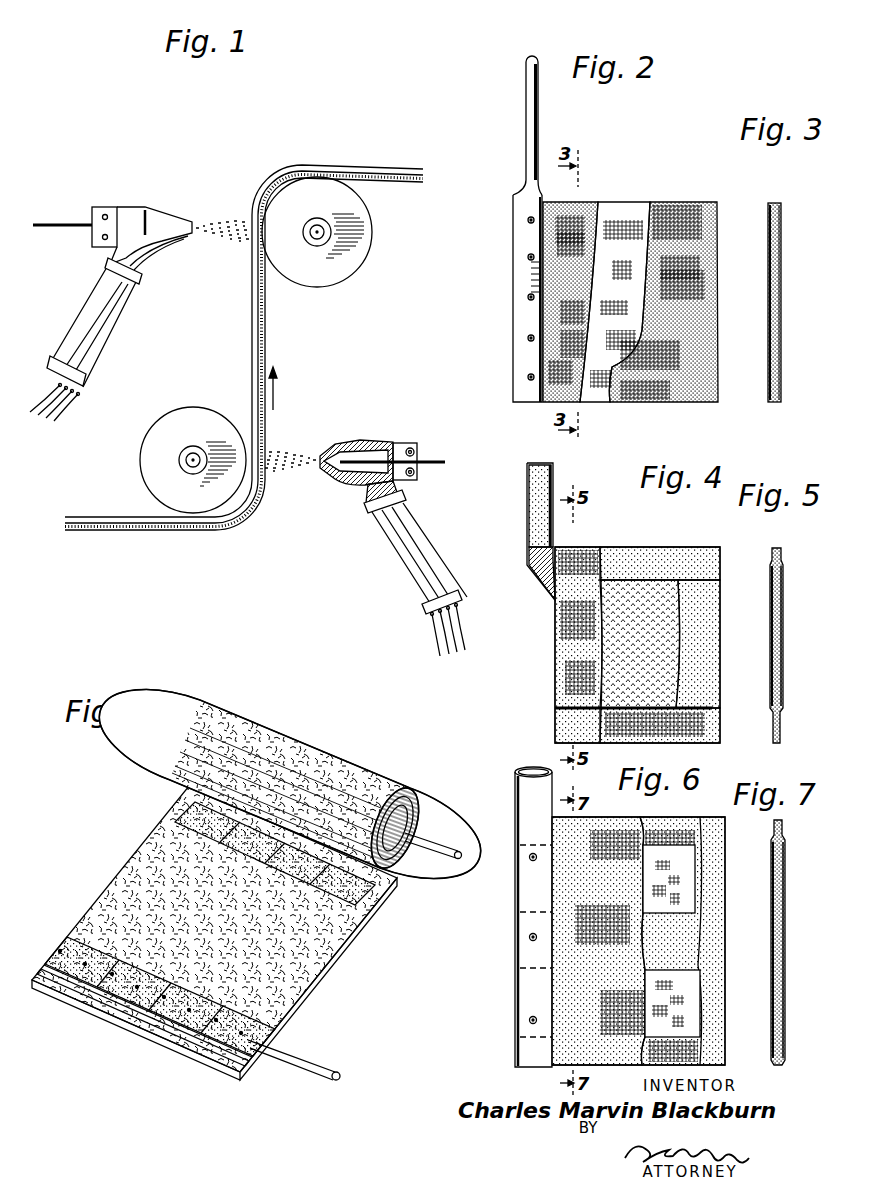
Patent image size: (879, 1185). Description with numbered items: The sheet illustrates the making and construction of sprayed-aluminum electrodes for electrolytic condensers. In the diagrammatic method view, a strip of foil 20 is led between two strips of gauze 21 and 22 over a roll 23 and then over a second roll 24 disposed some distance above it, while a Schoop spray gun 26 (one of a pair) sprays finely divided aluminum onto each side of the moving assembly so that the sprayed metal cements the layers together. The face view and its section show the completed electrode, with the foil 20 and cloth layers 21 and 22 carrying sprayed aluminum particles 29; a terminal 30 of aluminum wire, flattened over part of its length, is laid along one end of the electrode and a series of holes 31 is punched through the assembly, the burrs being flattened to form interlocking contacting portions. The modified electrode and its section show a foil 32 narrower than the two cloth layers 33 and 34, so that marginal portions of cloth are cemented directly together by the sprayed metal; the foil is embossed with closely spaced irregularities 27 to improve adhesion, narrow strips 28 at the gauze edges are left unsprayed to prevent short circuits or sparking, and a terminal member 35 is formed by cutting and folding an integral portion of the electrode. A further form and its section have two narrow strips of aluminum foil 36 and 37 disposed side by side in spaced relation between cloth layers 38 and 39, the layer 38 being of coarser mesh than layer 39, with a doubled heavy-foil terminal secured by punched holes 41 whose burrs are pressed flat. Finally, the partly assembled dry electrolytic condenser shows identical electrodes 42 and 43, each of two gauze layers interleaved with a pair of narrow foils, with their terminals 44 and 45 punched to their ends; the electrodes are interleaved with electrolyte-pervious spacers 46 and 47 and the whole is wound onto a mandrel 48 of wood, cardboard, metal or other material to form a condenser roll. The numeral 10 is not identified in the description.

In FIG. 6, the tubular member 10 is at (522, 823).
In FIG. 1, the strip of foil 20 is at (257, 338).
In FIG. 2, the strip of foil 20 is at (628, 210).
In FIG. 3, the strip of foil 20 is at (773, 402).
In FIG. 1, the strip of gauze 21 is at (252, 311).
In FIG. 2, the strip of gauze 21 is at (585, 207).
In FIG. 3, the strip of gauze 21 is at (781, 210).
In FIG. 1, the strip of gauze 22 is at (265, 352).
In FIG. 2, the strip of gauze 22 is at (690, 208).
In FIG. 3, the strip of gauze 22 is at (768, 392).
In FIG. 1, the roll 23 is at (140, 461).
In FIG. 1, the second roll 24 is at (335, 233).
In FIG. 1, the Schoop spray gun 26 is at (128, 222).
In FIG. 4, the irregularities 27 is at (650, 628).
In FIG. 4, the narrow strips 28 is at (718, 552).
In FIG. 2, the aluminum particles 29 is at (558, 366).
In FIG. 2, the terminal 30 is at (525, 107).
In FIG. 2, the holes 31 is at (527, 256).
In FIG. 4, the foil 32 is at (640, 580).
In FIG. 5, the foil 32 is at (770, 588).
In FIG. 4, the cloth layer 33 is at (575, 580).
In FIG. 5, the cloth layer 33 is at (782, 555).
In FIG. 4, the cloth layer 34 is at (700, 562).
In FIG. 5, the cloth layer 34 is at (770, 670).
In FIG. 4, the terminal member 35 is at (553, 478).
In FIG. 6, the strip of aluminum foil 36 is at (655, 850).
In FIG. 7, the strip of aluminum foil 36 is at (772, 880).
In FIG. 6, the strip of aluminum foil 37 is at (690, 1000).
In FIG. 6, the cloth layer 38 is at (560, 985).
In FIG. 7, the cloth layer 38 is at (782, 1060).
In FIG. 6, the cloth layer 39 is at (705, 830).
In FIG. 7, the cloth layer 39 is at (772, 832).
In FIG. 6, the holes 41 is at (530, 935).
In FIG. 8, the electrode 42 is at (188, 825).
In FIG. 8, the electrode 43 is at (100, 938).
In FIG. 8, the terminal 44 is at (455, 855).
In FIG. 8, the terminal 45 is at (305, 1070).
In FIG. 8, the electrolyte-pervious spacer 46 is at (155, 870).
In FIG. 8, the electrolyte-pervious spacer 47 is at (75, 990).
In FIG. 8, the mandrel 48 is at (420, 830).